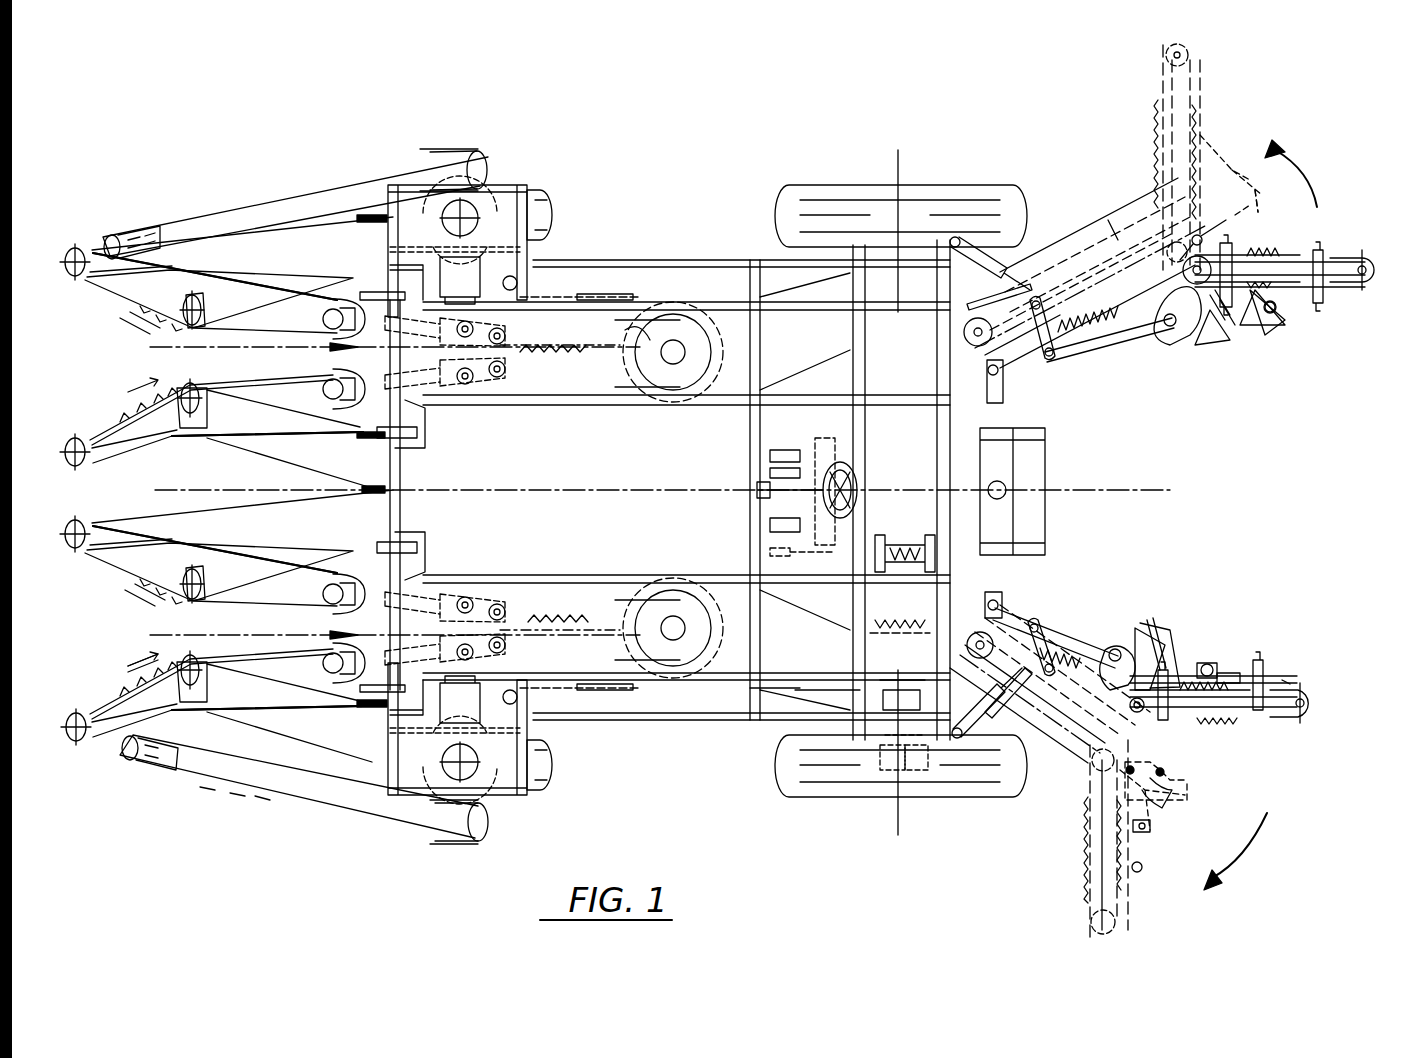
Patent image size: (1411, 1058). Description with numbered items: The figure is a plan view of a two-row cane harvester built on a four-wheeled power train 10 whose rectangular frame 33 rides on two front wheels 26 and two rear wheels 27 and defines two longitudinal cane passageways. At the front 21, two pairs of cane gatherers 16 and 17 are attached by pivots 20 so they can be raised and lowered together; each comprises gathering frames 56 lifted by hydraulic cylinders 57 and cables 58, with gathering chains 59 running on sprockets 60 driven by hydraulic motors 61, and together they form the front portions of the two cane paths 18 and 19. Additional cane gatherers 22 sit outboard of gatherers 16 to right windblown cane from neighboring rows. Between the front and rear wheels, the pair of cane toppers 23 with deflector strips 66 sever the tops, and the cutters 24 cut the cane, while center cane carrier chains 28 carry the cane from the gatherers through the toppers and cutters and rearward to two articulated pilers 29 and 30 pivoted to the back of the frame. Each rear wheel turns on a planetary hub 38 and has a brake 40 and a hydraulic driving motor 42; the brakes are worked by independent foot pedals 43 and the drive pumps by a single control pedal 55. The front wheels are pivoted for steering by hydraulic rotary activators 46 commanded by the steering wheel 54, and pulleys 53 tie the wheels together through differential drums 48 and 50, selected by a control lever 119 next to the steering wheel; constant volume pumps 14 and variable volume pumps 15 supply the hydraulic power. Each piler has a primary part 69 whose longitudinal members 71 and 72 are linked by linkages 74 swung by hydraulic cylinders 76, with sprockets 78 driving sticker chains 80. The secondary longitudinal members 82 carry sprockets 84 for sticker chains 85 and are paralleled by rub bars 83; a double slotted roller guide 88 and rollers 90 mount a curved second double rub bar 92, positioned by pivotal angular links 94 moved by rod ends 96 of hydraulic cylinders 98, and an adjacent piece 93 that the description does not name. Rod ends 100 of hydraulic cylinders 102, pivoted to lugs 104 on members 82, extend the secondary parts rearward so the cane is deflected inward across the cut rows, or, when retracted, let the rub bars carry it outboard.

The power train 10 is at (622, 264).
The constant volume pumps 14 is at (1030, 428).
The variable volume pumps 15 is at (806, 450).
The cane gatherers 16 is at (95, 248).
The cane gatherers 17 is at (100, 430).
The path 18 is at (1190, 52).
The path 19 is at (1128, 640).
The pivots 20 is at (355, 222).
The front 21 is at (370, 205).
The additional cane gatherers 22 is at (268, 200).
The cane toppers 23 is at (676, 382).
The cutters 24 is at (738, 398).
The front wheels 26 is at (552, 228).
The rear wheels 27 is at (778, 188).
The center cane carrier chains 28 is at (515, 352).
The articulated piler 29 is at (1112, 228).
The articulated piler 30 is at (1282, 680).
The rectangular frame 33 is at (720, 726).
The planetary hubs 38 is at (940, 790).
The brakes 40 is at (990, 752).
The hydraulic driving motors 42 is at (925, 694).
The foot pedals 43 is at (768, 460).
The hydraulic rotary activators 46 is at (474, 160).
The differential drums 48 is at (915, 570).
The differential drums 50 is at (880, 542).
The pulleys 53 is at (500, 215).
The steering wheel 54 is at (750, 474).
The control pedal 55 is at (779, 533).
The gathering frames 56 is at (146, 460).
The hydraulic cylinders 57 is at (400, 290).
The cables 58 is at (270, 283).
The gathering chains 59 is at (145, 322).
The sprockets 60 is at (70, 275).
The hydraulic motors 61 is at (478, 160).
The deflector strips 66 is at (628, 332).
The primary part 69 is at (1135, 348).
The longitudinal member 71 is at (1170, 350).
The longitudinal member 72 is at (1110, 265).
The linkages 74 is at (1060, 345).
The hydraulic cylinders 76 is at (1000, 265).
The sprockets 78 is at (982, 348).
The sticker chains 80 is at (1120, 318).
The longitudinal members 82 is at (1300, 266).
The rub bars 83 is at (1366, 282).
The sprockets 84 is at (1235, 268).
The sticker chains 85 is at (1280, 255).
The double slotted roller guide 88 is at (1215, 230).
The rollers 90 is at (1228, 318).
The second double rub bar 92 is at (1205, 345).
The bracket plate 93 is at (1165, 640).
The pivotal angular links 94 is at (1275, 325).
The rod ends 96 is at (1224, 672).
The hydraulic cylinders 98 is at (1326, 300).
The rod ends 100 is at (1185, 210).
The hydraulic cylinders 102 is at (1025, 268).
The lugs 104 is at (1240, 215).
The control lever 119 is at (790, 556).